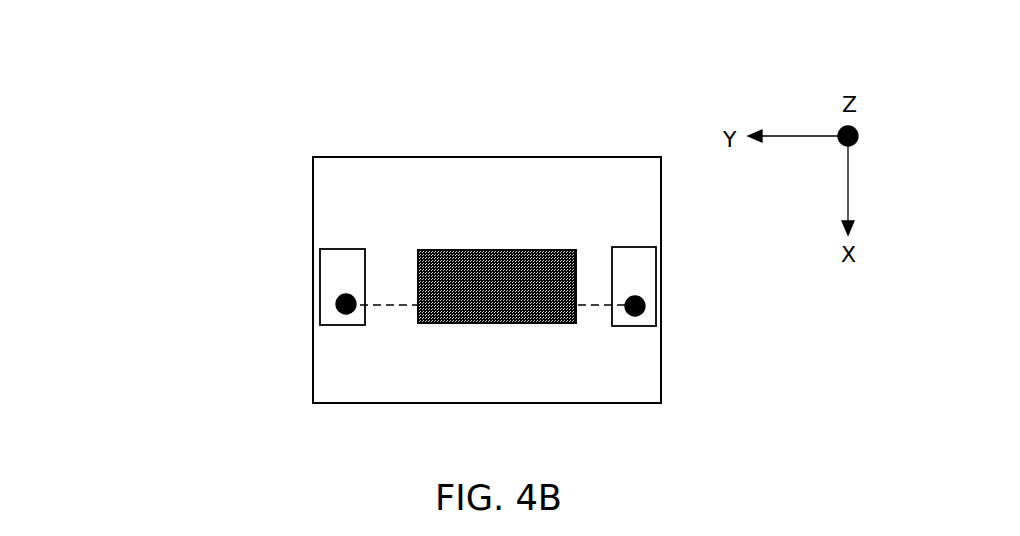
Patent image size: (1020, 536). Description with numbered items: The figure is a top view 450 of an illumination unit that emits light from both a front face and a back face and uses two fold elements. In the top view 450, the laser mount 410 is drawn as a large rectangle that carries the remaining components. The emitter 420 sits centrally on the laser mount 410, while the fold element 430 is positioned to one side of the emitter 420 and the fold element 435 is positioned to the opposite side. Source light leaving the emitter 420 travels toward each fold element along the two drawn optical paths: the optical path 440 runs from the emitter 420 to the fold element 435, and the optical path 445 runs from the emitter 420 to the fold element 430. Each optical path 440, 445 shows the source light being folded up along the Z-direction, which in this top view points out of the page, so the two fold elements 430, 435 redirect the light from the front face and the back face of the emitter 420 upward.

The top view 450 is at (432, 269).
The laser mount 410 is at (313, 352).
The emitter 420 is at (487, 280).
The fold element 430 is at (342, 249).
The fold element 435 is at (642, 268).
The optical path 440 is at (593, 303).
The optical path 445 is at (388, 305).